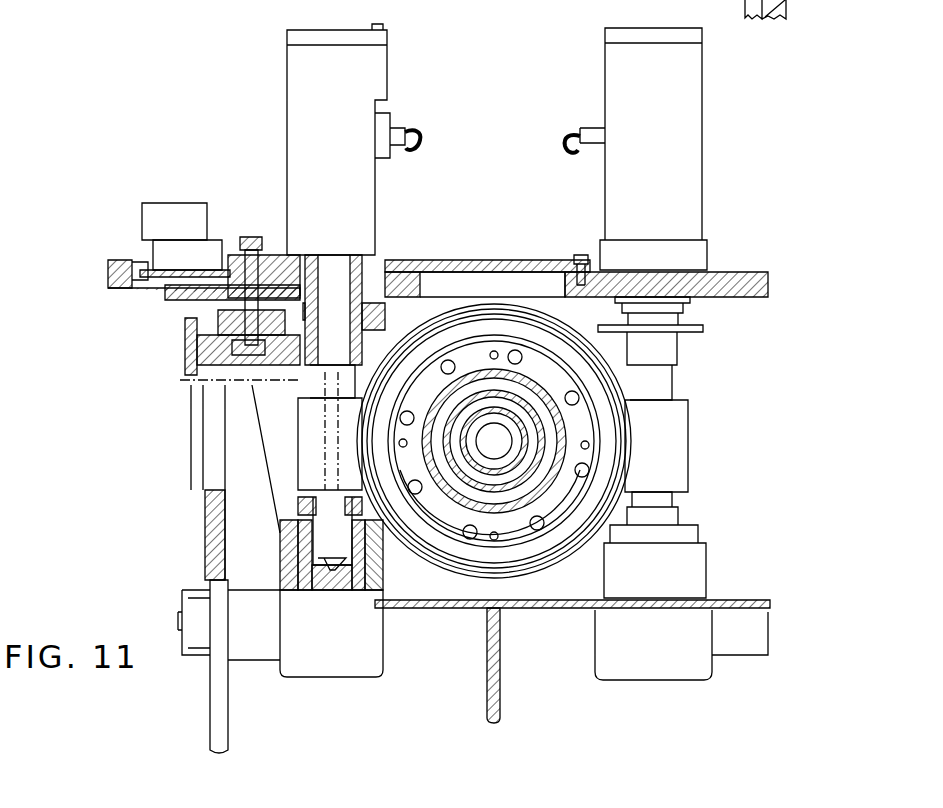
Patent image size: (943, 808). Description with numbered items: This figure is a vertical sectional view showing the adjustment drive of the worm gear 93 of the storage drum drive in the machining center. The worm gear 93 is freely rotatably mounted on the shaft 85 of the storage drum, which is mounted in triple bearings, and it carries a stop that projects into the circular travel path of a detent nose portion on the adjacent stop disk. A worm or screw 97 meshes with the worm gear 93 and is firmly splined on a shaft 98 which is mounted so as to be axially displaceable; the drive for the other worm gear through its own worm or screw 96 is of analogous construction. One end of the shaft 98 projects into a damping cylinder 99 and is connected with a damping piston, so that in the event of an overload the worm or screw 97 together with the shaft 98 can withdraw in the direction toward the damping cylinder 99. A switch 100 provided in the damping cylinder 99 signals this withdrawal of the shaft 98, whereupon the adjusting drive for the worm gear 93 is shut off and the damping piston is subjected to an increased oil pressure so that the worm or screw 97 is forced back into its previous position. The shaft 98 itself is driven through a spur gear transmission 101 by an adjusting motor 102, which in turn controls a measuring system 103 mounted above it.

The shaft 85 is at (520, 445).
The worm gear 93 is at (458, 574).
The worm or screw 96 is at (673, 458).
The worm or screw 97 is at (305, 425).
The shaft 98 is at (318, 378).
The damping cylinder 99 is at (372, 83).
The switch 100 is at (394, 135).
The spur gear transmission 101 is at (188, 347).
The adjusting motor 102 is at (160, 250).
The measuring system 103 is at (178, 210).